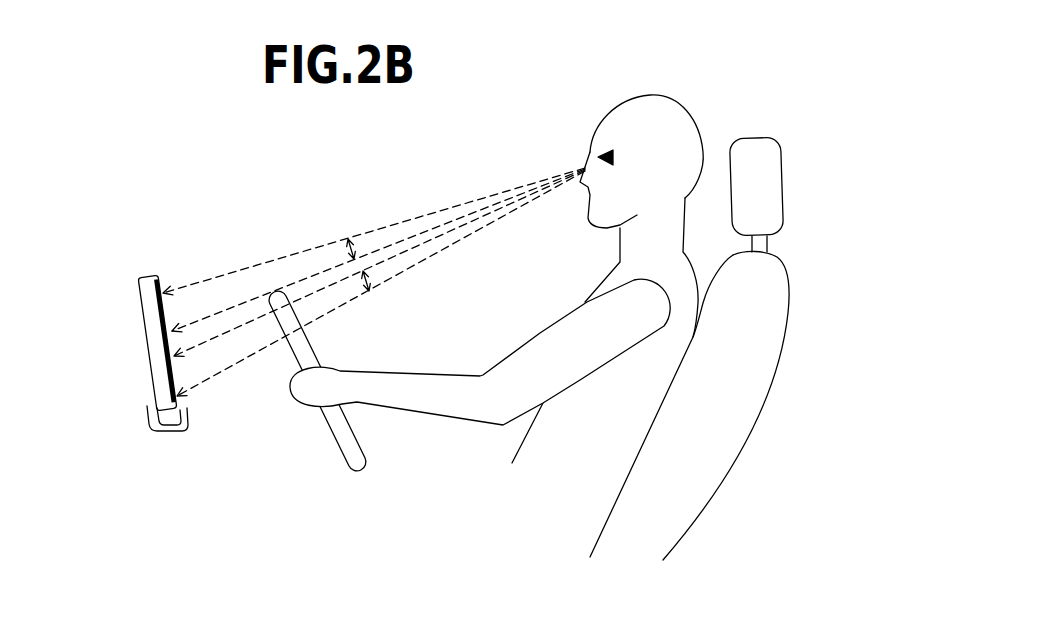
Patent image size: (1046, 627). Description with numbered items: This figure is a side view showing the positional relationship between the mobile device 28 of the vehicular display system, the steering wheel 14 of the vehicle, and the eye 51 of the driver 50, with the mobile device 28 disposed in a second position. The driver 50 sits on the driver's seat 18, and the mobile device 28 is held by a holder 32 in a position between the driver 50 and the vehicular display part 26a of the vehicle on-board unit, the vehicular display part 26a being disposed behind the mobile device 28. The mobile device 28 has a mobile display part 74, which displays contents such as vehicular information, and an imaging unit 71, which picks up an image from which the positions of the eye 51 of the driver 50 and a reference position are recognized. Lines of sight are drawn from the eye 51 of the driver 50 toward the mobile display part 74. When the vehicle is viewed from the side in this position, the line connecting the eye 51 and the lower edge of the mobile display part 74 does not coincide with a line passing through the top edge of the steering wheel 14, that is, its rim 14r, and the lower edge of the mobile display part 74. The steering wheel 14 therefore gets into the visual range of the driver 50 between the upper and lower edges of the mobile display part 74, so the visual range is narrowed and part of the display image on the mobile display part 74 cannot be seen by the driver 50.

The steering wheel 14 is at (314, 381).
The rim 14r is at (275, 298).
The driver's seat 18 is at (713, 413).
The vehicular display part 26a is at (180, 308).
The mobile device 28 is at (128, 295).
The holder 32 is at (177, 432).
The driver 50 is at (650, 93).
The eye 51 is at (603, 150).
The imaging unit 71 is at (161, 278).
The mobile display part 74 is at (168, 354).